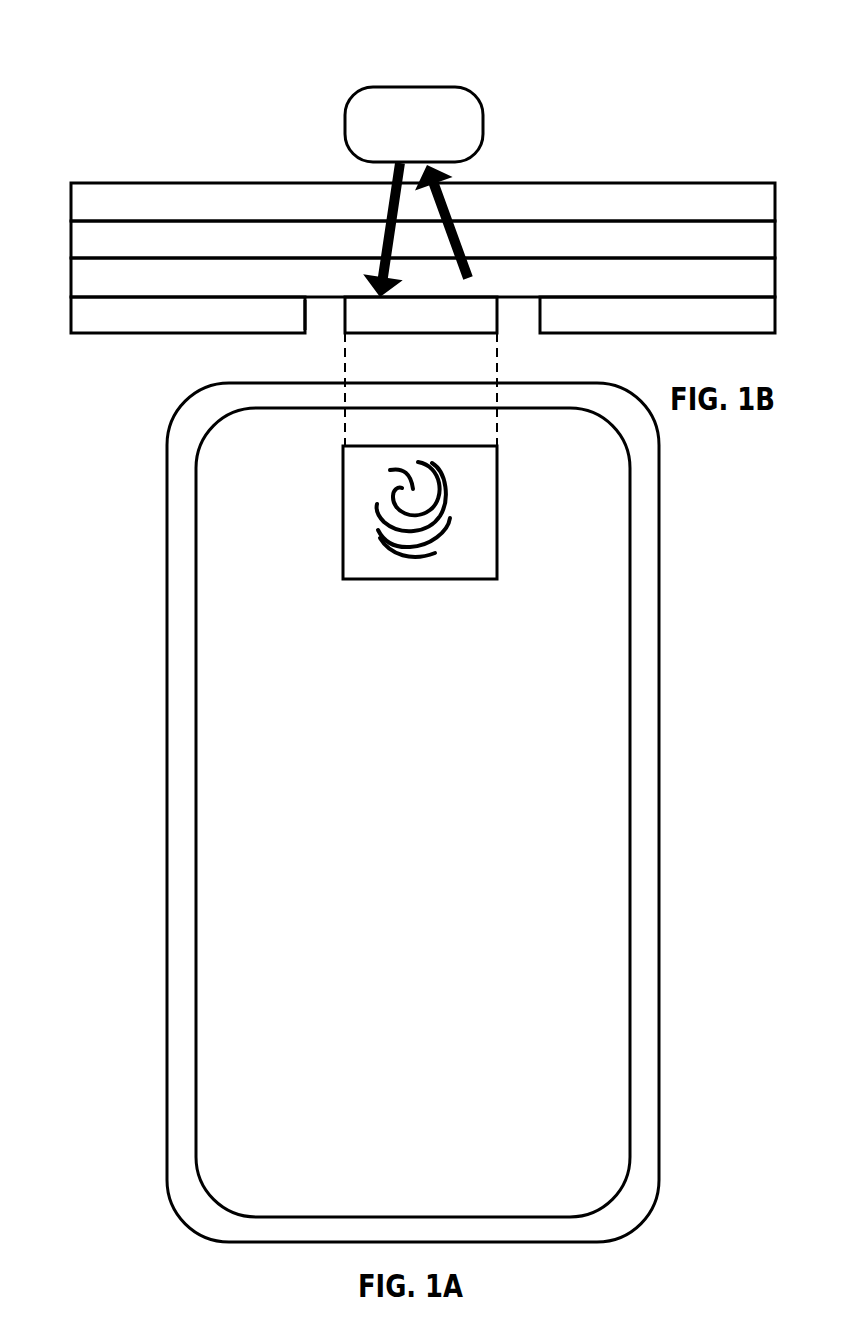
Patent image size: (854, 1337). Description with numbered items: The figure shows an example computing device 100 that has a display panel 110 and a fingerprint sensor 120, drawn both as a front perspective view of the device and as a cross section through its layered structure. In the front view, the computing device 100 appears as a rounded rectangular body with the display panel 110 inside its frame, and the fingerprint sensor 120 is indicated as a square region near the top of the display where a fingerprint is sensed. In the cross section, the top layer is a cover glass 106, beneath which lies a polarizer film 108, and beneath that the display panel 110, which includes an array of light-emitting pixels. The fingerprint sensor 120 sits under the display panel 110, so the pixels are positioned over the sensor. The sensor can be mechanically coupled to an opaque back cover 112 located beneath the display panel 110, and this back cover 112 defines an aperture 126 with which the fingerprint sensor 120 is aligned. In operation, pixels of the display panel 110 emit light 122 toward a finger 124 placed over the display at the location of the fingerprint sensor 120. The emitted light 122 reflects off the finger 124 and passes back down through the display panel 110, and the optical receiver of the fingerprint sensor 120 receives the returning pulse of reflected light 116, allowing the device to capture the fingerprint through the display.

In FIG. 1A, the computing device 100 is at (138, 454).
In FIG. 1B, the cover glass 106 is at (294, 215).
In FIG. 1B, the polarizer film 108 is at (294, 253).
In FIG. 1B, the display panel 110 is at (294, 291).
In FIG. 1A, the display panel 110 is at (245, 793).
In FIG. 1B, the back cover 112 is at (294, 329).
In FIG. 1B, the reflected light 116 is at (385, 203).
In FIG. 1B, the fingerprint sensor 120 is at (462, 327).
In FIG. 1A, the fingerprint sensor 120 is at (343, 532).
In FIG. 1B, the emitted light 122 is at (448, 195).
In FIG. 1B, the finger 124 is at (480, 108).
In FIG. 1B, the aperture 126 is at (323, 326).